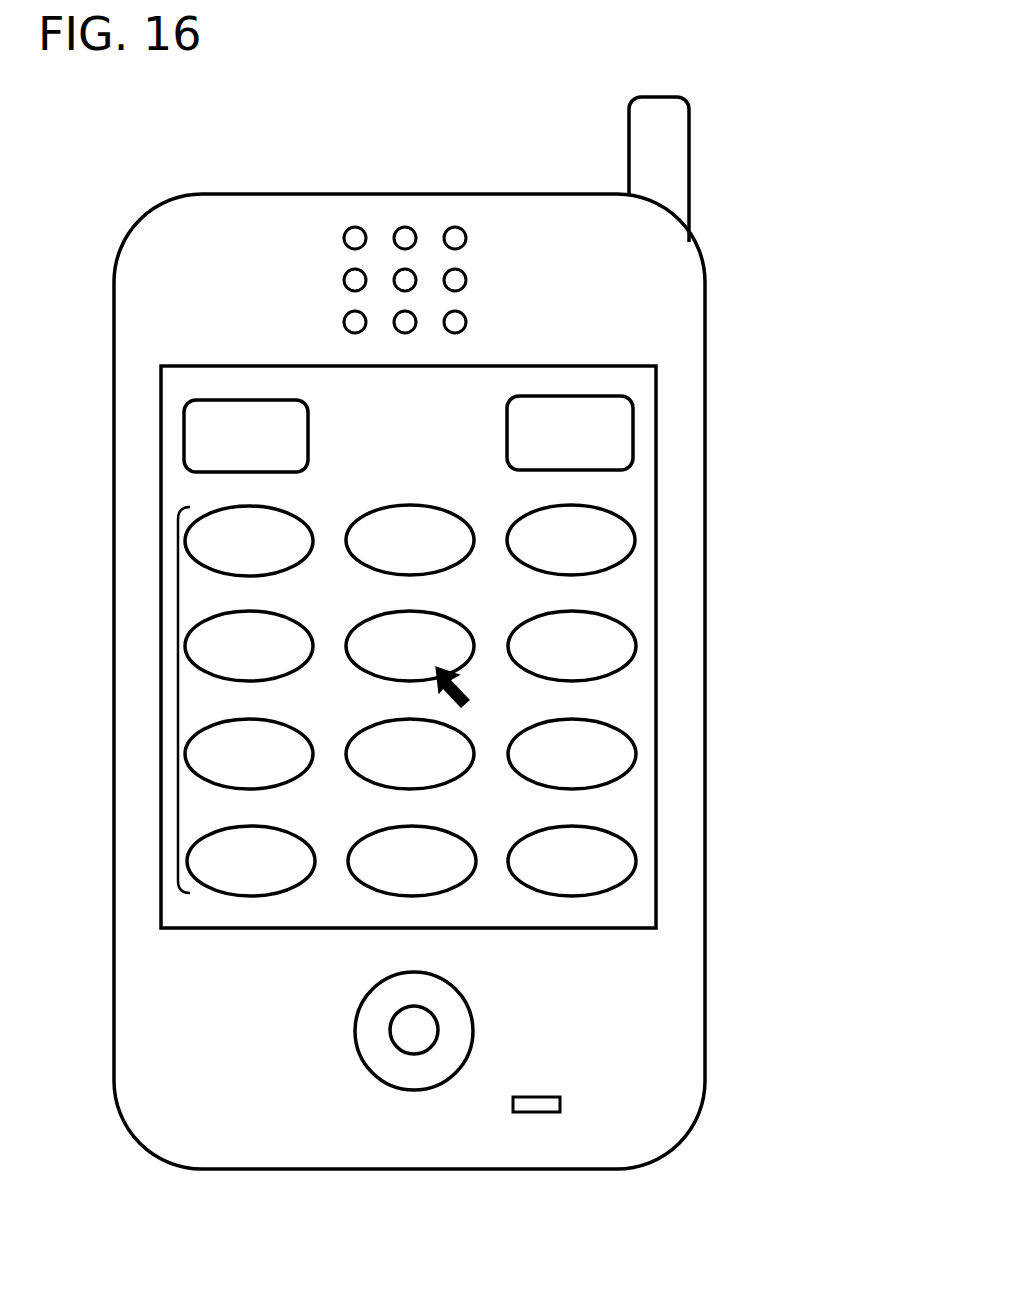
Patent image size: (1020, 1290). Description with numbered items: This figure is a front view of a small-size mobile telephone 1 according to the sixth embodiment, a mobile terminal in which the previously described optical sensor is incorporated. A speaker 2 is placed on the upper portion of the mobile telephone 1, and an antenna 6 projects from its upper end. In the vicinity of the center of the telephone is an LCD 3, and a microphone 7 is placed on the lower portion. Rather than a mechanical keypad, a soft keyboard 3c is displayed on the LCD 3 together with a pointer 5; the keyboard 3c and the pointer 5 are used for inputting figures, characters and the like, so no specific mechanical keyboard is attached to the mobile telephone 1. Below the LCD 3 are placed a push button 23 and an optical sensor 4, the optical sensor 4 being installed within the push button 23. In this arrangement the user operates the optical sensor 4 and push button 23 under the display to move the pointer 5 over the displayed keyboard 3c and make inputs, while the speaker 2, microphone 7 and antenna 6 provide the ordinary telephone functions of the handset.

The mobile telephone 1 is at (258, 194).
The speaker 2 is at (405, 240).
The LCD 3 is at (401, 647).
The keyboard 3c is at (178, 700).
The optical sensor 4 is at (413, 1030).
The pointer 5 is at (465, 682).
The antenna 6 is at (658, 163).
The microphone 7 is at (535, 1104).
The push button 23 is at (440, 1002).